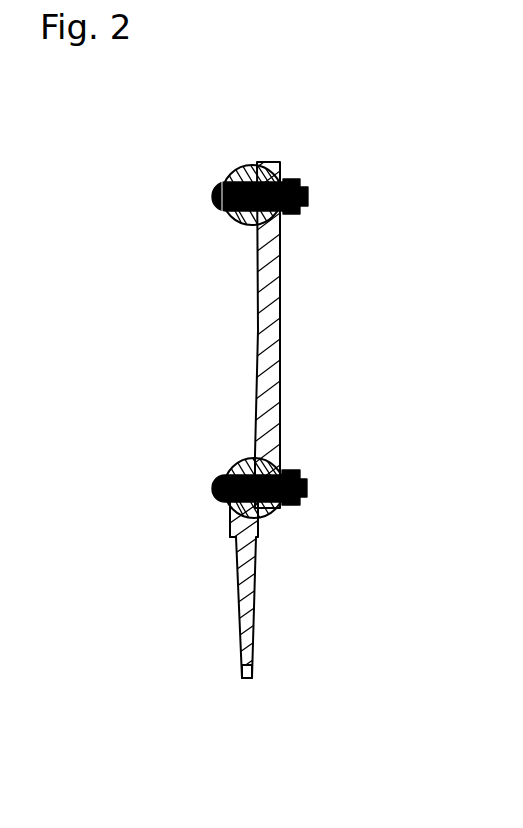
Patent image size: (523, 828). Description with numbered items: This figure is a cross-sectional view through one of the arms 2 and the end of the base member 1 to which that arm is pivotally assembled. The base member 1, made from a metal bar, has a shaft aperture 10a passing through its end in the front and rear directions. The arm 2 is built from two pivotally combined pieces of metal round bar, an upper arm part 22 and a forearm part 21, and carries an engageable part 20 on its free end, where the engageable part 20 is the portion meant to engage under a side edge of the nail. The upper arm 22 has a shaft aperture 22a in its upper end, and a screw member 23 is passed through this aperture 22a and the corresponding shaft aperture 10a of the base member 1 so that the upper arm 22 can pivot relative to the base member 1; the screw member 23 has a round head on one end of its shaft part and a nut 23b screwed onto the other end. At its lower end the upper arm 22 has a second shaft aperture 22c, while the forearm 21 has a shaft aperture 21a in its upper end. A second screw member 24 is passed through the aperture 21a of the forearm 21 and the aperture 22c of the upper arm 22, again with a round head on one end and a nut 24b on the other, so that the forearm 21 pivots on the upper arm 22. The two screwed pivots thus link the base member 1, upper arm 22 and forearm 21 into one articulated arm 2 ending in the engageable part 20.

The base member 1 is at (245, 168).
The arm 2 is at (280, 342).
The shaft aperture 10a is at (240, 225).
The engageable part 20 is at (246, 681).
The forearm part 21 is at (238, 585).
The shaft aperture 21a is at (235, 512).
The upper arm part 22 is at (280, 322).
The shaft aperture 22a is at (280, 166).
The shaft aperture 22c is at (270, 518).
The screw member 23 is at (215, 200).
The nut 23b is at (305, 185).
The screw member 24 is at (212, 492).
The nut 24b is at (300, 475).